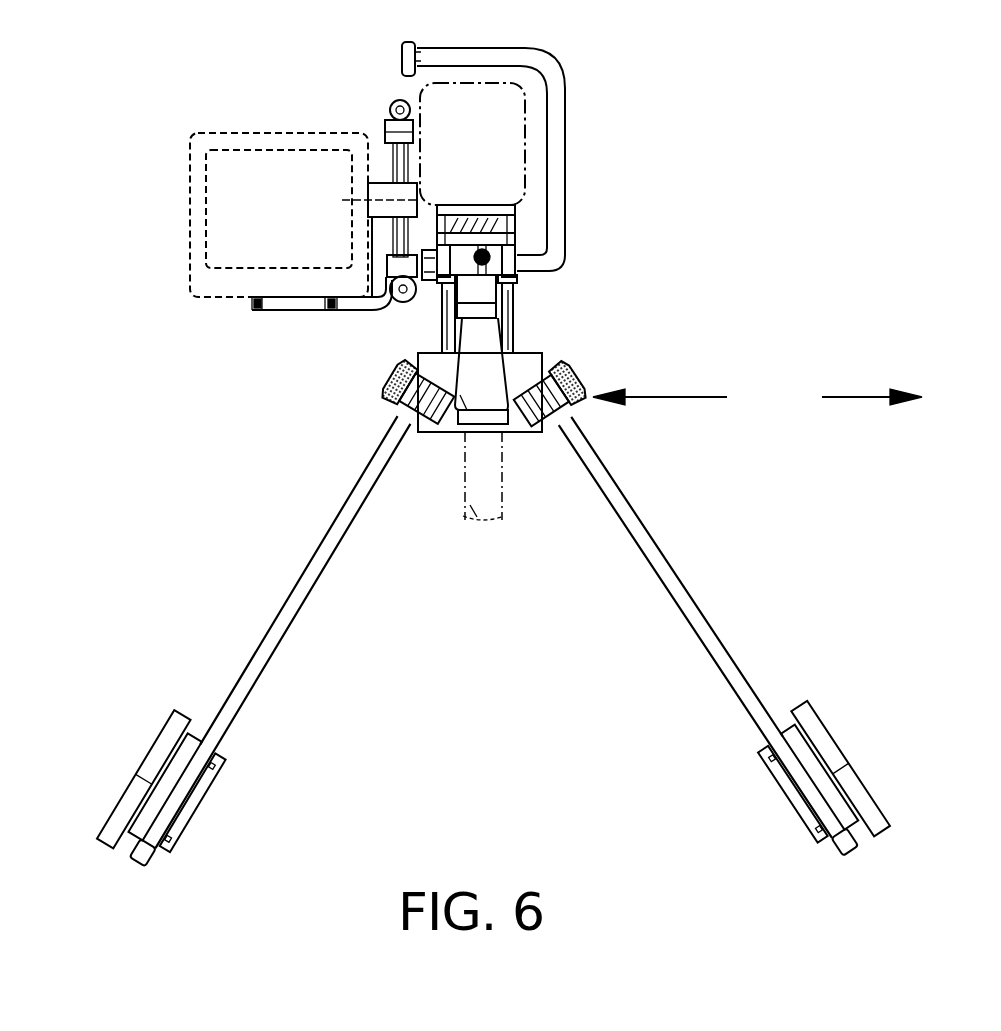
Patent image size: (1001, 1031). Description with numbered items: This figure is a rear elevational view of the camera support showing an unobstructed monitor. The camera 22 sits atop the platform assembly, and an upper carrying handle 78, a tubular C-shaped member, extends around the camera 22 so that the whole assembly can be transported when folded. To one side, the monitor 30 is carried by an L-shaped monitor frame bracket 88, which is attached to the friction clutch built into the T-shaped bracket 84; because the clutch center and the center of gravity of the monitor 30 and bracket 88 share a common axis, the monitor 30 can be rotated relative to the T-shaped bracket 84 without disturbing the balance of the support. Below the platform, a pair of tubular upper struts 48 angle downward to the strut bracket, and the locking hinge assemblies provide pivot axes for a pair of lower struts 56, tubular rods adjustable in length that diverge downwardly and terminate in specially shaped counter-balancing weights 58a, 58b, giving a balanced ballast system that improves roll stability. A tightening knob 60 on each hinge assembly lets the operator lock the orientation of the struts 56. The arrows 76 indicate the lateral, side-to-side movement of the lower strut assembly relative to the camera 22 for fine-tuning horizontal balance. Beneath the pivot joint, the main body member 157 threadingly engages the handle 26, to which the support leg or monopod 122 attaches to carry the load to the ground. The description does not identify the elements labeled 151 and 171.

The camera 22 is at (430, 98).
The monitor 30 is at (192, 140).
The T-shaped bracket 84 is at (383, 137).
The upper carrying handle 78 is at (553, 65).
The monitor frame bracket 88 is at (253, 305).
The upper clamp block 151 is at (483, 292).
The main body member 157 is at (513, 303).
The upper struts 48 is at (513, 322).
The tightening knob 60 is at (383, 406).
The arrows 76 is at (757, 397).
The lower struts 56 is at (260, 658).
The counter-balancing weight 58a is at (817, 735).
The counter-balancing weight 58b is at (132, 795).
The handle 26 is at (463, 432).
The column flange 171 is at (500, 437).
The monopod 122 is at (482, 507).